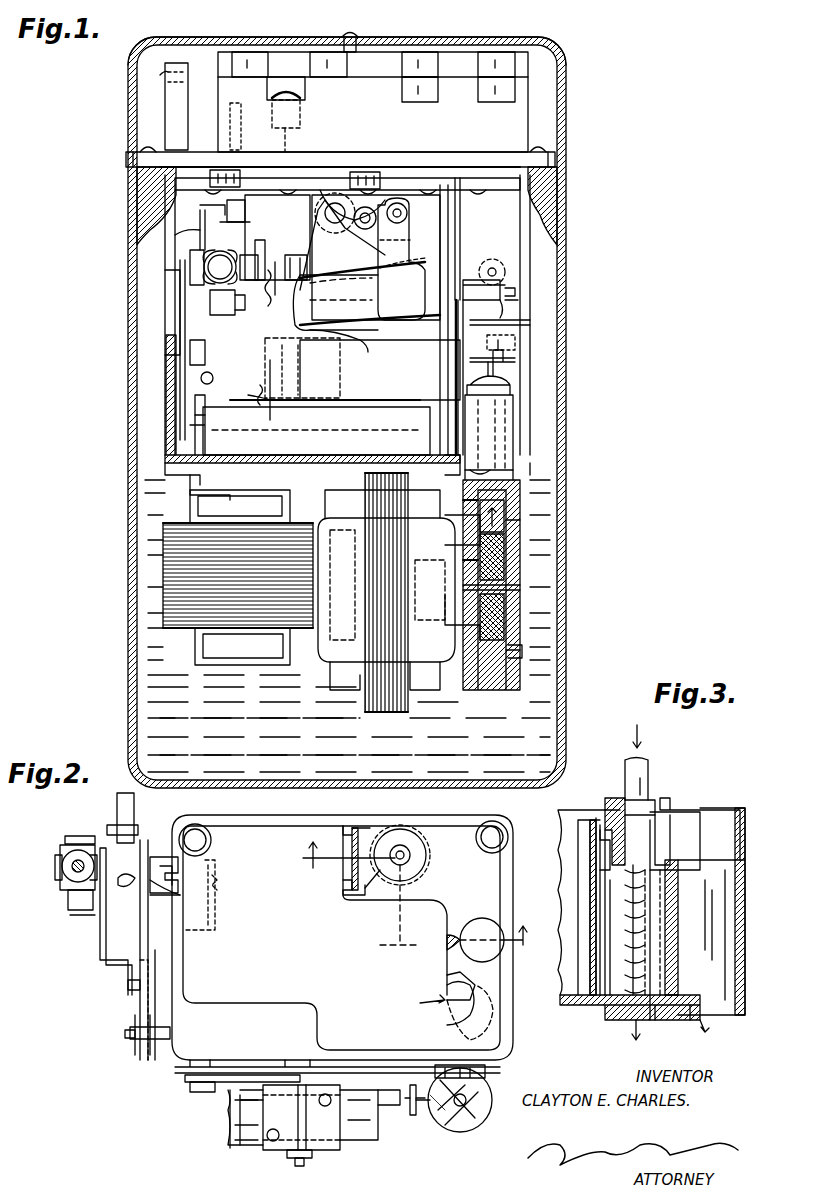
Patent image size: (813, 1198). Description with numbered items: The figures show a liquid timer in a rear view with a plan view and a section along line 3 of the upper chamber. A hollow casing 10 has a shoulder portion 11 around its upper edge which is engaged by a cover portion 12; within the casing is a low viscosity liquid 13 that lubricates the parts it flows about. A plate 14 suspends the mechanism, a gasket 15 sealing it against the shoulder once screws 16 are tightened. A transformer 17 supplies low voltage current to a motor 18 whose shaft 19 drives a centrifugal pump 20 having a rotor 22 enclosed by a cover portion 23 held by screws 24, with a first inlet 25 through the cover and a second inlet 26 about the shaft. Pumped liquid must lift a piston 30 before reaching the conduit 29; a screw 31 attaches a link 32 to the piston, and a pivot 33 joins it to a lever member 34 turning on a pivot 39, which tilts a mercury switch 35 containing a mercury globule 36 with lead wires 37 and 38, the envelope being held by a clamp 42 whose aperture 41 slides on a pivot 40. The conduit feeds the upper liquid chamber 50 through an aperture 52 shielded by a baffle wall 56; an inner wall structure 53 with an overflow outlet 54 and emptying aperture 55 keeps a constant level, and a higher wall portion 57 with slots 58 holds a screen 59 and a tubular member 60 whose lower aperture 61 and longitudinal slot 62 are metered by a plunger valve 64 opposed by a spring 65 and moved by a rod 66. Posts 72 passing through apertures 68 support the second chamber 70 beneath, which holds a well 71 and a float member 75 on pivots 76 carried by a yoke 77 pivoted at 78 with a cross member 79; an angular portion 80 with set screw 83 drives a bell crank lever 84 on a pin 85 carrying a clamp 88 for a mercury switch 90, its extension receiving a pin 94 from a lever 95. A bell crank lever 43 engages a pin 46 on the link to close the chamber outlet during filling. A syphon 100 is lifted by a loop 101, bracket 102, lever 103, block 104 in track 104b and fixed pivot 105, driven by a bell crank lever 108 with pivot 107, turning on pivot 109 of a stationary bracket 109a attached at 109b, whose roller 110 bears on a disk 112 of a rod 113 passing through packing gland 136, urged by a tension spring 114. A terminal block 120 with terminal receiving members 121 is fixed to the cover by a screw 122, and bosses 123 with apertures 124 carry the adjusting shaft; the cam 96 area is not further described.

In FIG. 1, the hollow casing 10 is at (560, 405).
In FIG. 1, the shoulder portion 11 is at (552, 210).
In FIG. 1, the cover portion 12 is at (442, 37).
In FIG. 1, the liquid 13 is at (548, 478).
In FIG. 1, the plate 14 is at (450, 152).
In FIG. 1, the gasket 15 is at (322, 165).
In FIG. 1, the screws 16 is at (148, 148).
In FIG. 1, the transformer 17 is at (175, 603).
In FIG. 1, the motor 18 is at (405, 695).
In FIG. 1, the shaft 19 is at (455, 583).
In FIG. 1, the pump 20 is at (523, 706).
In FIG. 1, the rotor 22 is at (515, 628).
In FIG. 1, the cover portion 23 is at (515, 555).
In FIG. 1, the screws 24 is at (515, 528).
In FIG. 1, the first inlet 25 is at (521, 591).
In FIG. 1, the second inlet 26 is at (460, 625).
In FIG. 1, the conduit 29 is at (510, 380).
In FIG. 1, the piston 30 is at (505, 470).
In FIG. 1, the screw 31 is at (512, 355).
In FIG. 1, the link 32 is at (518, 325).
In FIG. 2, the link 32 is at (480, 1072).
In FIG. 1, the pivot 33 is at (492, 268).
In FIG. 2, the pivot 33 is at (470, 1105).
In FIG. 1, the lever member 34 is at (462, 250).
In FIG. 2, the lever member 34 is at (389, 1096).
In FIG. 1, the mercury switch 35 is at (328, 292).
In FIG. 2, the mercury switch 35 is at (240, 1120).
In FIG. 1, the mercury globule 36 is at (343, 344).
In FIG. 1, the lead wire 37 is at (510, 287).
In FIG. 1, the lead wire 38 is at (511, 311).
In FIG. 1, the pivot 39 is at (342, 222).
In FIG. 2, the pivot 39 is at (190, 1088).
In FIG. 1, the pivot 40 is at (356, 192).
In FIG. 2, the pivot 40 is at (242, 1103).
In FIG. 1, the aperture 41 is at (368, 240).
In FIG. 1, the clamp 42 is at (370, 261).
In FIG. 2, the clamp 42 is at (330, 1130).
In FIG. 2, the bell crank lever 43 is at (410, 1110).
In FIG. 2, the pin 46 is at (428, 1105).
In FIG. 1, the upper liquid chamber 50 is at (376, 257).
In FIG. 2, the upper liquid chamber 50 is at (342, 937).
In FIG. 2, the aperture 52 is at (421, 1000).
In FIG. 2, the inner wall structure 53 is at (450, 895).
In FIG. 3, the inner wall structure 53 is at (668, 868).
In FIG. 2, the overflow outlet 54 is at (478, 930).
In FIG. 3, the overflow outlet 54 is at (722, 1010).
In FIG. 2, the aperture 55 is at (450, 948).
In FIG. 3, the aperture 55 is at (690, 980).
In FIG. 2, the horizontal wall structure 56 is at (445, 1024).
In FIG. 3, the horizontal wall structure 56 is at (674, 1020).
In FIG. 2, the wall portion 57 is at (375, 885).
In FIG. 2, the slots 58 is at (345, 872).
In FIG. 2, the screen 59 is at (352, 845).
In FIG. 3, the screen 59 is at (590, 945).
In FIG. 2, the tubular member 60 is at (395, 880).
In FIG. 3, the tubular member 60 is at (665, 798).
In FIG. 2, the lower aperture 61 is at (410, 852).
In FIG. 3, the lower aperture 61 is at (635, 1025).
In FIG. 3, the longitudinal slot 62 is at (605, 880).
In FIG. 3, the plunger type valve 64 is at (622, 798).
In FIG. 3, the resilient spring 65 is at (620, 990).
In FIG. 3, the rod 66 is at (648, 768).
In FIG. 2, the apertures 68 is at (197, 832).
In FIG. 1, the second chamber 70 is at (380, 370).
In FIG. 1, the well 71 is at (235, 482).
In FIG. 1, the posts 72 is at (462, 215).
In FIG. 1, the float member 75 is at (355, 403).
In FIG. 1, the pivot 76 is at (204, 401).
In FIG. 1, the yoke 77 is at (185, 385).
In FIG. 1, the pivot 78 is at (165, 418).
In FIG. 1, the cross member 79 is at (308, 432).
In FIG. 1, the angular portion 80 is at (204, 352).
In FIG. 1, the set screw 83 is at (214, 376).
In FIG. 1, the bell crank lever 84 is at (170, 330).
In FIG. 1, the pin 85 is at (262, 294).
In FIG. 1, the clamp 88 is at (190, 260).
In FIG. 1, the mercury switch 90 is at (210, 268).
In FIG. 1, the pin 94 is at (180, 238).
In FIG. 1, the lever 95 is at (276, 190).
In FIG. 1, the cam 96 is at (365, 185).
In FIG. 1, the syphon 100 is at (260, 400).
In FIG. 2, the syphon 100 is at (117, 798).
In FIG. 2, the loop 101 is at (115, 826).
In FIG. 1, the bracket 102 is at (275, 345).
In FIG. 2, the bracket 102 is at (152, 860).
In FIG. 1, the lever 103 is at (292, 255).
In FIG. 2, the lever 103 is at (148, 1002).
In FIG. 2, the block 104 is at (178, 918).
In FIG. 2, the track 104b is at (178, 935).
In FIG. 2, the fixed pivot 105 is at (125, 1033).
In FIG. 2, the pivot 107 is at (132, 990).
In FIG. 1, the bell crank lever 108 is at (258, 252).
In FIG. 2, the bell crank lever 108 is at (100, 951).
In FIG. 2, the pivot 109 is at (70, 912).
In FIG. 2, the stationary bracket 109a is at (215, 915).
In FIG. 2, the attachment point 109b is at (218, 886).
In FIG. 1, the frictionless roller 110 is at (250, 255).
In FIG. 2, the frictionless roller 110 is at (73, 836).
In FIG. 1, the disk 112 is at (216, 226).
In FIG. 2, the disk 112 is at (63, 846).
In FIG. 1, the rod 113 is at (243, 210).
In FIG. 2, the rod 113 is at (60, 866).
In FIG. 1, the tension spring 114 is at (233, 307).
In FIG. 1, the terminal block 120 is at (515, 105).
In FIG. 1, the terminal receiving members 121 is at (292, 90).
In FIG. 1, the screw 122 is at (351, 35).
In FIG. 1, the bosses 123 is at (186, 100).
In FIG. 1, the apertures 124 is at (168, 72).
In FIG. 1, the packing gland 136 is at (213, 178).
In FIG. 2, the section line 3— 3 is at (414, 895).